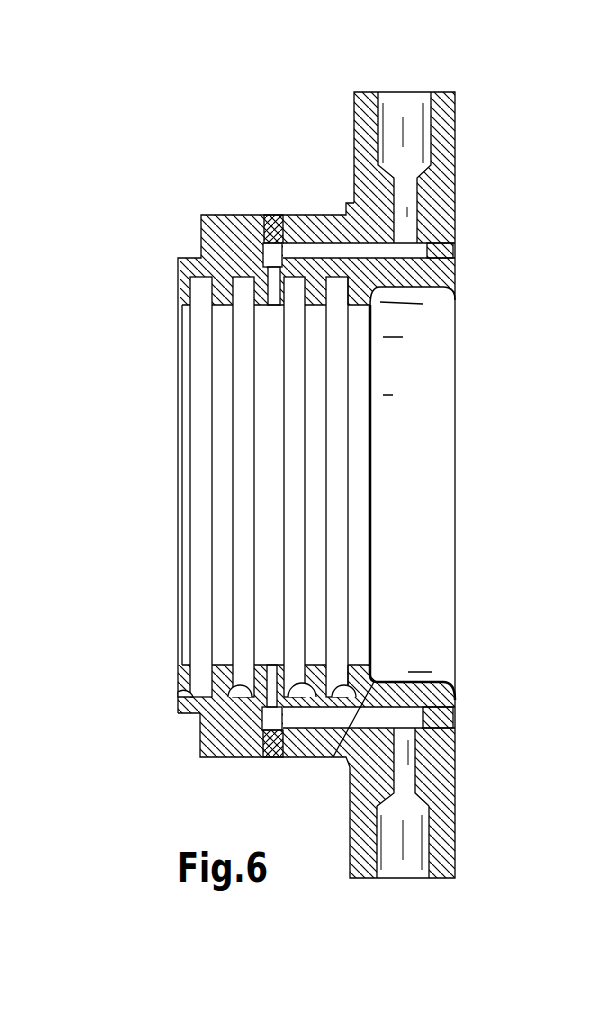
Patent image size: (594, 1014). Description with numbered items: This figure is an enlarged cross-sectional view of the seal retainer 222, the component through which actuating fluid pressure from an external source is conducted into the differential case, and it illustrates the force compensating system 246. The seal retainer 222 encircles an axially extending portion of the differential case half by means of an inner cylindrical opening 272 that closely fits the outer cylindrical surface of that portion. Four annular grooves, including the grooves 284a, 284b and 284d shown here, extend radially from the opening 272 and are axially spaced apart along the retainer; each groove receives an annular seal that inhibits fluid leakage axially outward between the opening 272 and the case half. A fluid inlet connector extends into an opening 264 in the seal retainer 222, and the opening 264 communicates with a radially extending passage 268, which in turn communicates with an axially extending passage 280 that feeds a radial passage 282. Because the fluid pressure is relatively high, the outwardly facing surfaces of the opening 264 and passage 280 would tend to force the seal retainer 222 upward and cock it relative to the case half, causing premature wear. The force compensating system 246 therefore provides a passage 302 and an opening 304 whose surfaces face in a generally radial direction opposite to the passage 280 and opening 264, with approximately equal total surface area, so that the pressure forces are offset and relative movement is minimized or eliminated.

The seal retainer 222 is at (172, 440).
The force compensating system 246 is at (462, 104).
The opening 304 is at (421, 173).
The passage 302 is at (425, 258).
The radial passage 282 is at (268, 667).
The inner cylindrical opening 272 is at (356, 667).
The axially extending passage 280 is at (395, 713).
The radially extending passage 268 is at (403, 760).
The opening 264 is at (431, 822).
The annular groove 284a is at (178, 690).
The annular groove 284b is at (316, 697).
The annular groove 284d is at (356, 697).